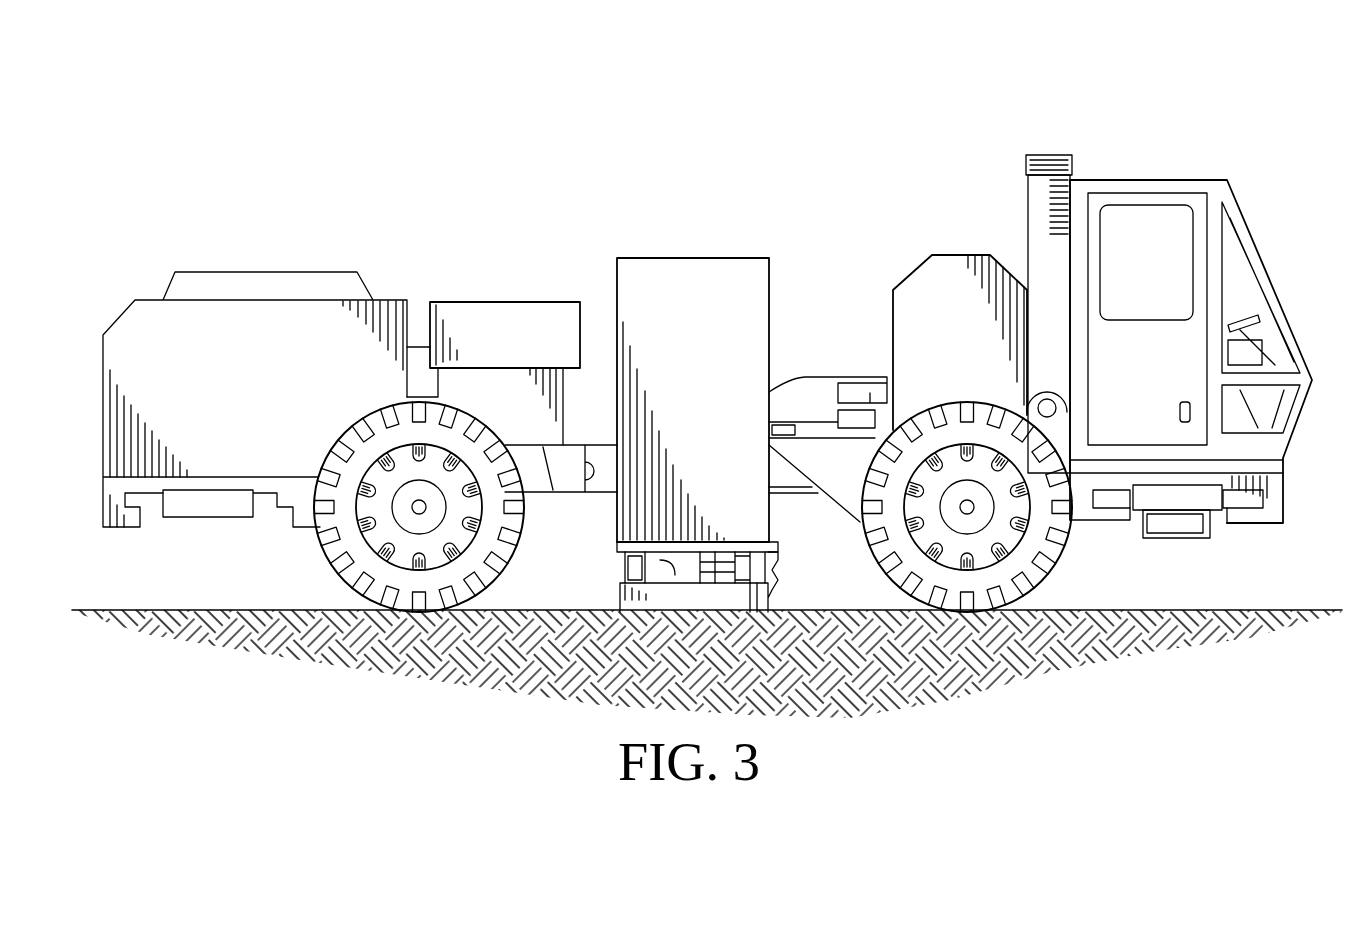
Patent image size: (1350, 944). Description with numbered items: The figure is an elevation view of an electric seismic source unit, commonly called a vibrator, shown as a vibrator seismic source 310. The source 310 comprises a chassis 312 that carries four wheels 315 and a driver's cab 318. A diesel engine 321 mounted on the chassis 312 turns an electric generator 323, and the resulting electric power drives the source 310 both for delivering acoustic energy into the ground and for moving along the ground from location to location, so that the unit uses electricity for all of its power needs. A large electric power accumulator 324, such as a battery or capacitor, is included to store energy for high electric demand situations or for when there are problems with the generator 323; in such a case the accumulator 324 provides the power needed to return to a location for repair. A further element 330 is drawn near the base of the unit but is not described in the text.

The mobile drilling machine 310 is at (616, 122).
The chassis frame with mast 312 is at (600, 497).
The wheels 315 is at (322, 545).
The operator cab 318 is at (1273, 280).
The rear tank body 321 is at (285, 407).
The control unit box 323 is at (478, 352).
The front body section 324 is at (935, 362).
The mast base assembly 330 is at (772, 598).